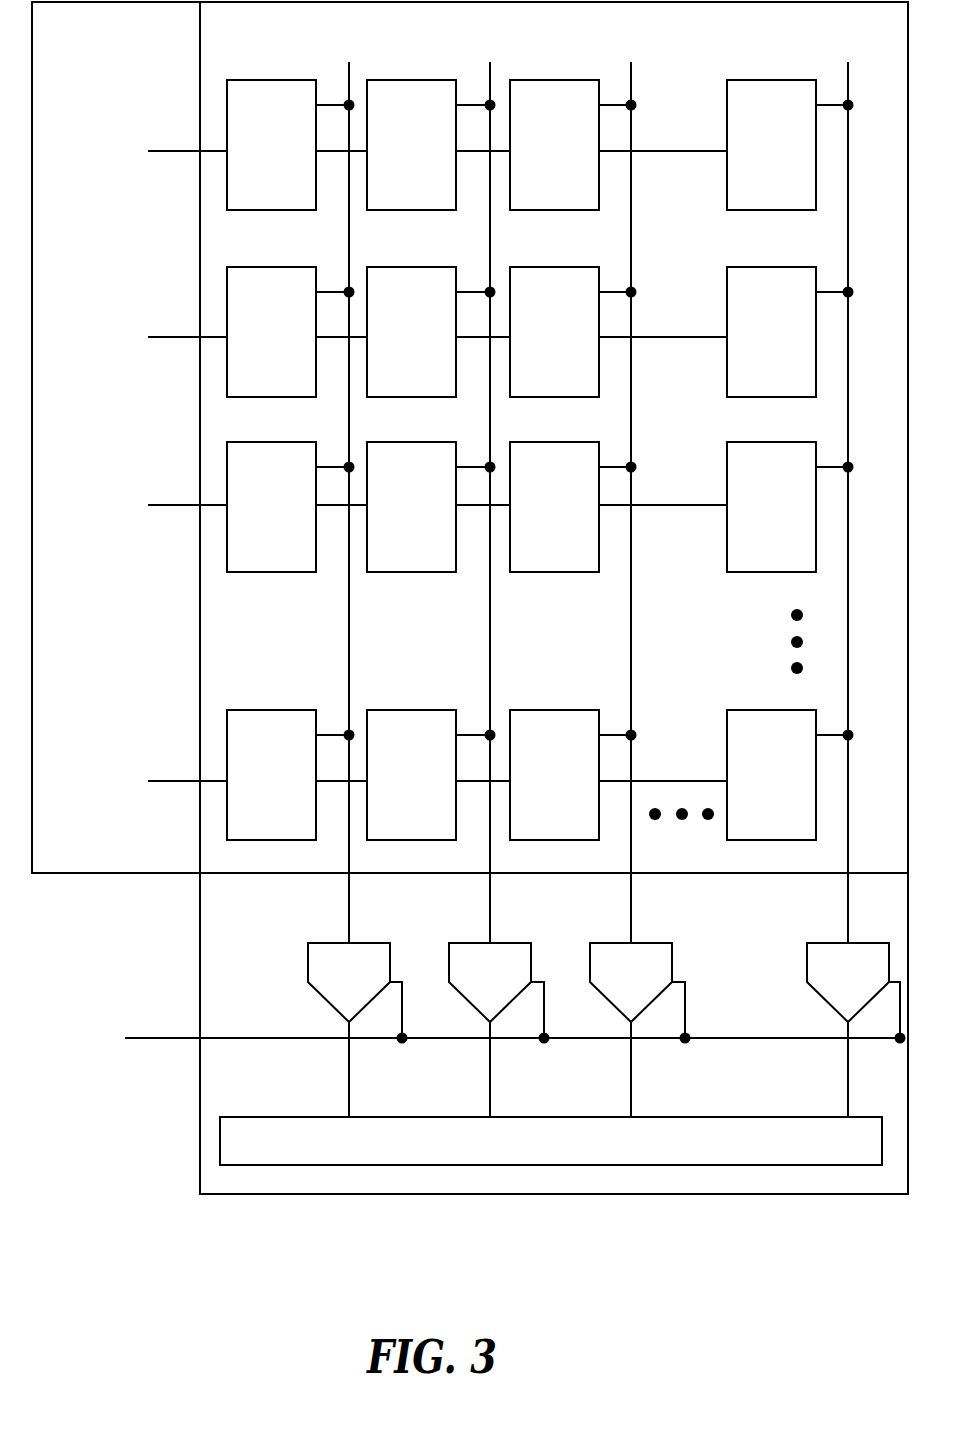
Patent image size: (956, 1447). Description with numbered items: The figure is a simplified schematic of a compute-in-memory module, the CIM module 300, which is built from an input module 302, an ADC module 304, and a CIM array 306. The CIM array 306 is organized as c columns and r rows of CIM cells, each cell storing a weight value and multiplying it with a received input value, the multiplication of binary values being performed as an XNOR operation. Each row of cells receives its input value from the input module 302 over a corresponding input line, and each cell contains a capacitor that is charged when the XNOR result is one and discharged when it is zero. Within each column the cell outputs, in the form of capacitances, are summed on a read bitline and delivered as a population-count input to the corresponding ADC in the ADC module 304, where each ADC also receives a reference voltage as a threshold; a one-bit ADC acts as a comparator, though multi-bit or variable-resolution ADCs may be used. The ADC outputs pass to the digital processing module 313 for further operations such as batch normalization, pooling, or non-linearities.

The CIM module 300 is at (470, 653).
The input module 302 is at (99, 866).
The ADC module 304 is at (206, 1104).
The CIM array 306 is at (223, 862).
The digital processing module 313 is at (706, 1151).